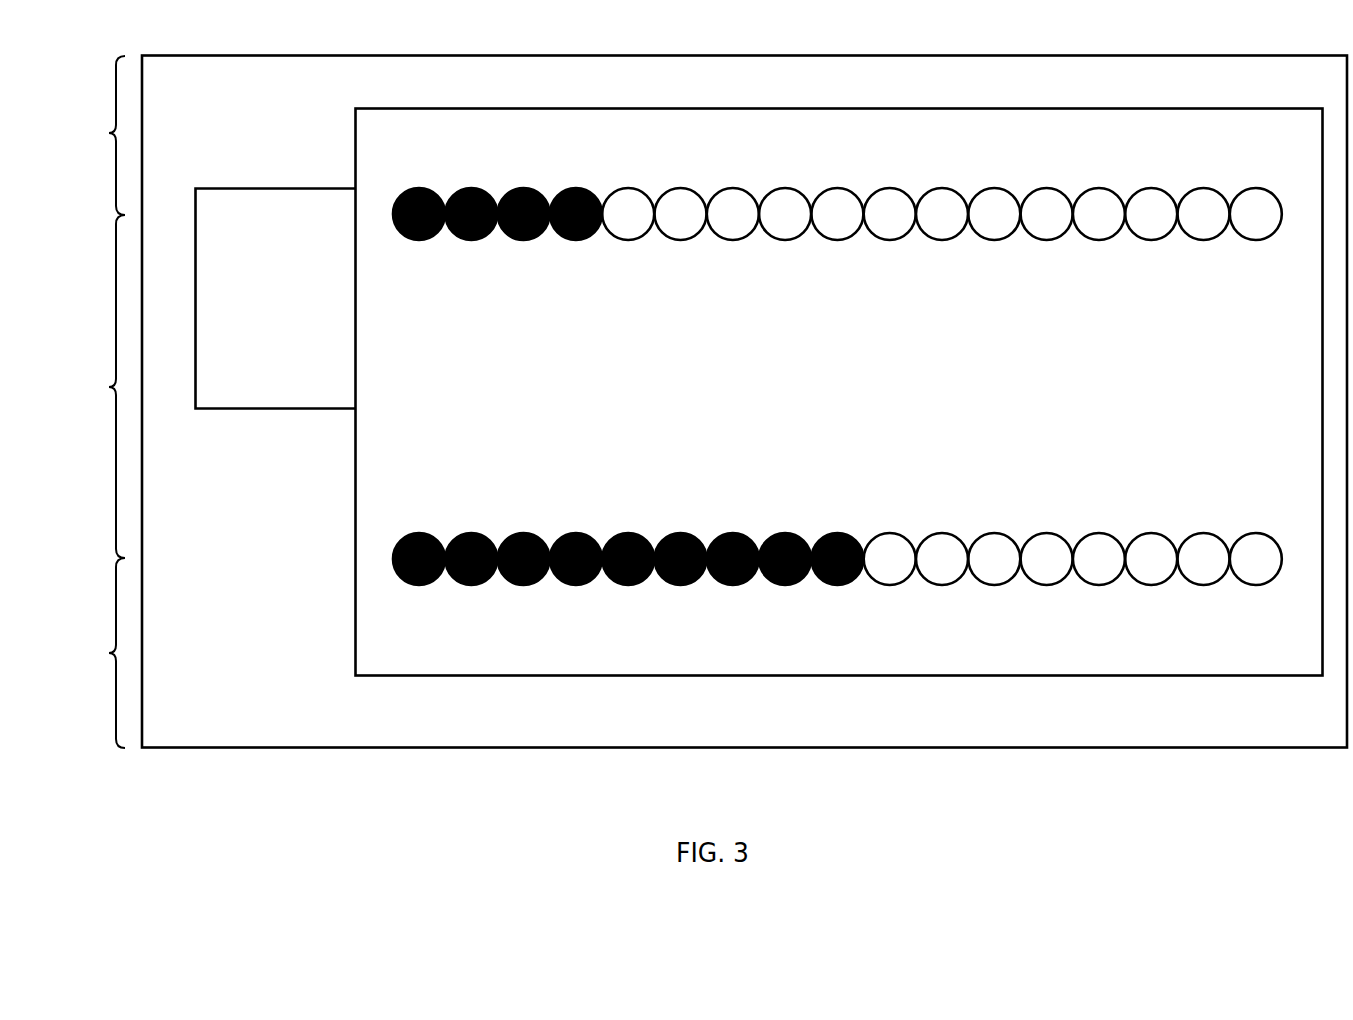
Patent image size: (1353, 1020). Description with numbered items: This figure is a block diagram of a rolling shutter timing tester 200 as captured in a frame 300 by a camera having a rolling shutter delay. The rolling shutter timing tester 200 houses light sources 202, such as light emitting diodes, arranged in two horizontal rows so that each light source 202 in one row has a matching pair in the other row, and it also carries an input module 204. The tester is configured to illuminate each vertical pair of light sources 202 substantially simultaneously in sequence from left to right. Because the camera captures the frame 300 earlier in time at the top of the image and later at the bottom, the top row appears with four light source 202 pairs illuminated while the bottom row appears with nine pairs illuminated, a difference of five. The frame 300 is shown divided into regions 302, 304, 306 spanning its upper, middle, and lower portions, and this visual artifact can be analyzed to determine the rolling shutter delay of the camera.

The frame 300 is at (812, 56).
The rolling shutter timing tester 200 is at (366, 109).
The input module 204 is at (273, 188).
The light sources 202 is at (1281, 170).
The upper region 302 is at (99, 135).
The middle region 304 is at (99, 386).
The lower region 306 is at (99, 653).